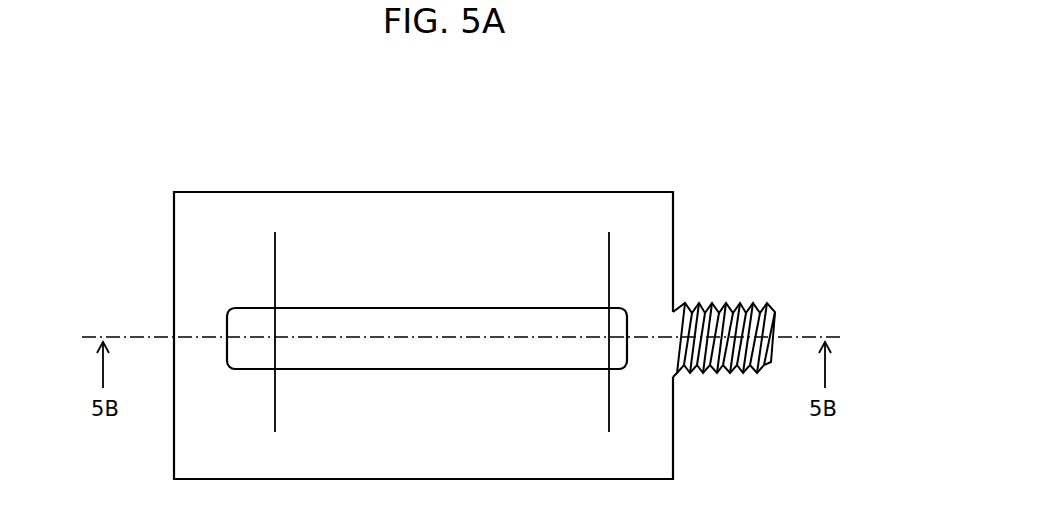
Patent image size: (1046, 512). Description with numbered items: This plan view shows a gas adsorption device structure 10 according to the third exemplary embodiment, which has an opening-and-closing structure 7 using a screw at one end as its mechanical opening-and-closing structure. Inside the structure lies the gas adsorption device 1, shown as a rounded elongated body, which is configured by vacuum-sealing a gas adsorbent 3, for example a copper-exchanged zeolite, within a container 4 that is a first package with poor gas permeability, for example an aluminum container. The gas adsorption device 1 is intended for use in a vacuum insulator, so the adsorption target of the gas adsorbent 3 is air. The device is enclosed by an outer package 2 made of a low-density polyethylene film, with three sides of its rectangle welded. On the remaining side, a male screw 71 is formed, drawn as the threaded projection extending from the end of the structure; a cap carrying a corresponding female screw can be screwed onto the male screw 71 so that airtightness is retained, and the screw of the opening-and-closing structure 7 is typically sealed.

The gas adsorption device structure 10 is at (148, 228).
The gas adsorption device 1 is at (346, 308).
The outer package 2 is at (378, 226).
The gas adsorbent 3 is at (460, 325).
The container 4 is at (533, 307).
The opening-and-closing structure 7 is at (750, 282).
The male screw 71 is at (705, 370).